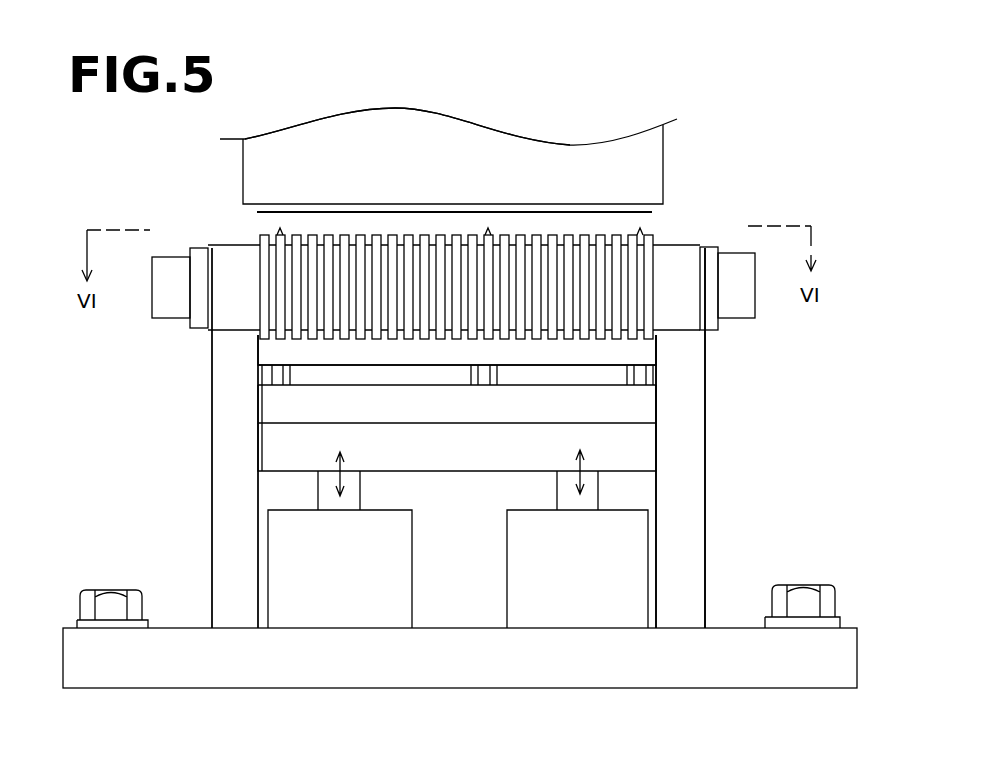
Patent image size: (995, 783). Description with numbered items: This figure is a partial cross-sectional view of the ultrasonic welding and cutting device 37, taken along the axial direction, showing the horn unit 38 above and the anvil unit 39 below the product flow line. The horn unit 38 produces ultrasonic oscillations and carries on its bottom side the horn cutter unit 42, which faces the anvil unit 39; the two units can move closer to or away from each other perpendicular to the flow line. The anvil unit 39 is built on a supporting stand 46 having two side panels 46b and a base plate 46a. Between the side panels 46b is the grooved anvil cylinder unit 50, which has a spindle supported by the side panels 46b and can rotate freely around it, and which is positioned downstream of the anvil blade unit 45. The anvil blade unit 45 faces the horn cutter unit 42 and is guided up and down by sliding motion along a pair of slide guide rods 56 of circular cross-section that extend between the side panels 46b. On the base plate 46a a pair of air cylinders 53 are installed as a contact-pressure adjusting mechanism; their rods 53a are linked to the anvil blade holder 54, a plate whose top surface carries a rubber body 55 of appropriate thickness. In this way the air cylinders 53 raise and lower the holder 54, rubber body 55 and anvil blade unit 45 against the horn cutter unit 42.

The ultrasonic welding and cutting device 37 is at (652, 98).
The horn unit 38 is at (520, 148).
The horn cutter unit 42 is at (645, 212).
The anvil cylinder unit 50 is at (262, 315).
The slide guide rods 56 is at (637, 347).
The anvil blade unit 45 is at (262, 372).
The rubber body 55 is at (641, 408).
The anvil blade holder 54 is at (641, 452).
The anvil unit 39 is at (705, 458).
The supporting stand 46 is at (228, 463).
The base plate 46a is at (485, 690).
The side panels 46b is at (232, 515).
The air cylinders 53 is at (346, 690).
The rods 53a is at (352, 488).